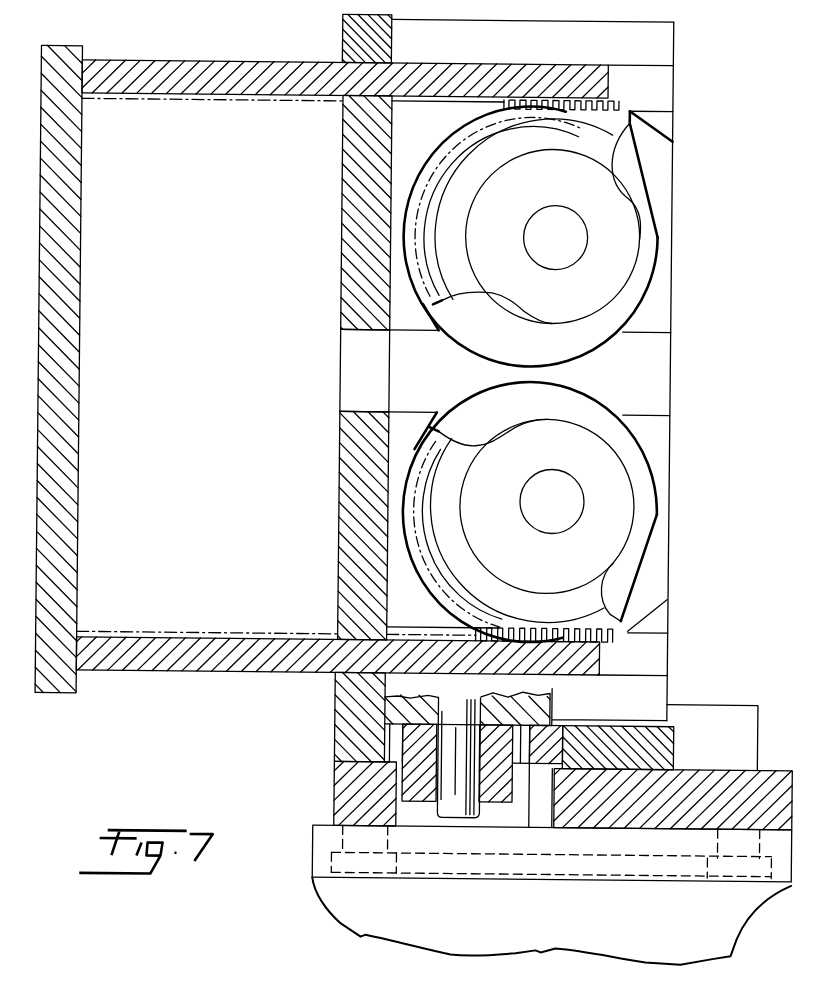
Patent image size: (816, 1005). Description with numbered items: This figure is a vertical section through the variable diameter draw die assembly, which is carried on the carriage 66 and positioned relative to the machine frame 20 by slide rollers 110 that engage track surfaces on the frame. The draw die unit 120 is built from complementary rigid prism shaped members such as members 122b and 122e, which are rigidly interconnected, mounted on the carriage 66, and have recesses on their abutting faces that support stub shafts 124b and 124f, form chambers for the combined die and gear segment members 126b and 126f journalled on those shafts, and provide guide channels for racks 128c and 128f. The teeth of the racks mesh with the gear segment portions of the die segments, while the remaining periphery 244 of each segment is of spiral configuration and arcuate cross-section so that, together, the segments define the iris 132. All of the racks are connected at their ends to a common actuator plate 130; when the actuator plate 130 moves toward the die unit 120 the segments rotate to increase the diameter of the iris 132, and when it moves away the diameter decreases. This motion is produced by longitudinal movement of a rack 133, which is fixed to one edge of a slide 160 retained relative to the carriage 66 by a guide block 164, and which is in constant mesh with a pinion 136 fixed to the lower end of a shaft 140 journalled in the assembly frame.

The frame 20 is at (561, 955).
The carriage 66 is at (770, 768).
The slide roller 110 is at (371, 882).
The draw die unit 120 is at (337, 457).
The prism shaped member 122b is at (669, 118).
The prism shaped member 122e is at (668, 618).
The stub shaft 124b is at (521, 235).
The stub shaft 124f is at (556, 533).
The combined die and gear segment member 126b is at (656, 238).
The combined die and gear segment member 126f is at (615, 563).
The rack 128c is at (256, 108).
The rack 128f is at (184, 675).
The actuator plate 130 is at (78, 339).
The iris 132 is at (561, 377).
The rack 133 is at (558, 768).
The pinion 136 is at (407, 749).
The shaft 140 is at (466, 818).
The slide 160 is at (631, 768).
The guide block 164 is at (714, 703).
The peripheral surface 244 is at (636, 312).